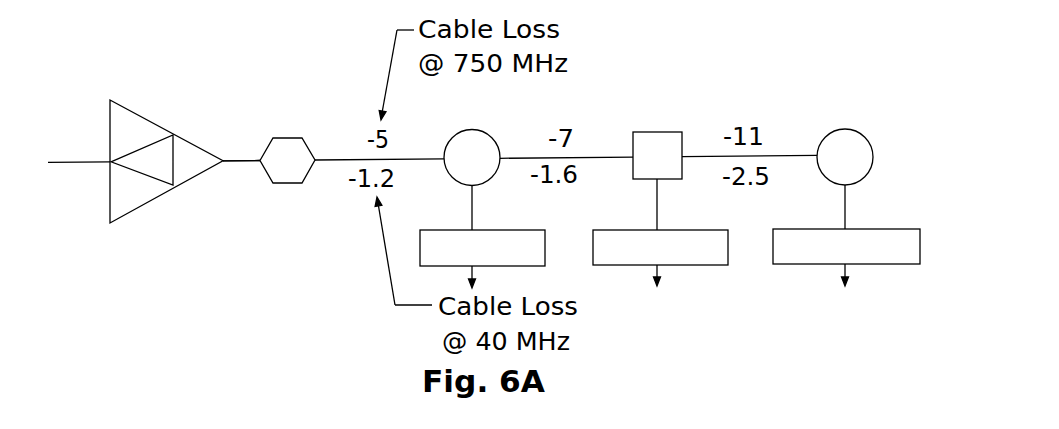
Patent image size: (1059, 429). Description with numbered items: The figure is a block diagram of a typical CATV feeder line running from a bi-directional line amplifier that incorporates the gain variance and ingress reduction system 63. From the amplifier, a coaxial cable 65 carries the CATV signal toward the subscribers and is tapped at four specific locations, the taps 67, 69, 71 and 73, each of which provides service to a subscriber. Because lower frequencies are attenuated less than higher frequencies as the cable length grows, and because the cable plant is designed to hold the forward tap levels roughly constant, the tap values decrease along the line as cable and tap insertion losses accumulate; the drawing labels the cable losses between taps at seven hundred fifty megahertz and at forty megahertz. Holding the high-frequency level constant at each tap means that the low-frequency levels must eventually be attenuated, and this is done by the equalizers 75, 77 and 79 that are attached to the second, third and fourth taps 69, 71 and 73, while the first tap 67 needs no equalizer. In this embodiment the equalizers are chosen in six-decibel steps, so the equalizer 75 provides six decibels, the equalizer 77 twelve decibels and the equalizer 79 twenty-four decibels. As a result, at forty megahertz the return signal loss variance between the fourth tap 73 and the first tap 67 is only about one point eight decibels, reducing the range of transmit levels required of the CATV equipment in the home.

The gain variance and ingress reduction system 63 is at (135, 90).
The coaxial cable 65 is at (241, 159).
The tap 1 67 is at (276, 183).
The tap 2 69 is at (448, 177).
The tap 3 71 is at (632, 180).
The tap 4 73 is at (825, 178).
The equalizer 75 is at (546, 243).
The equalizer 77 is at (715, 265).
The equalizer 79 is at (887, 264).